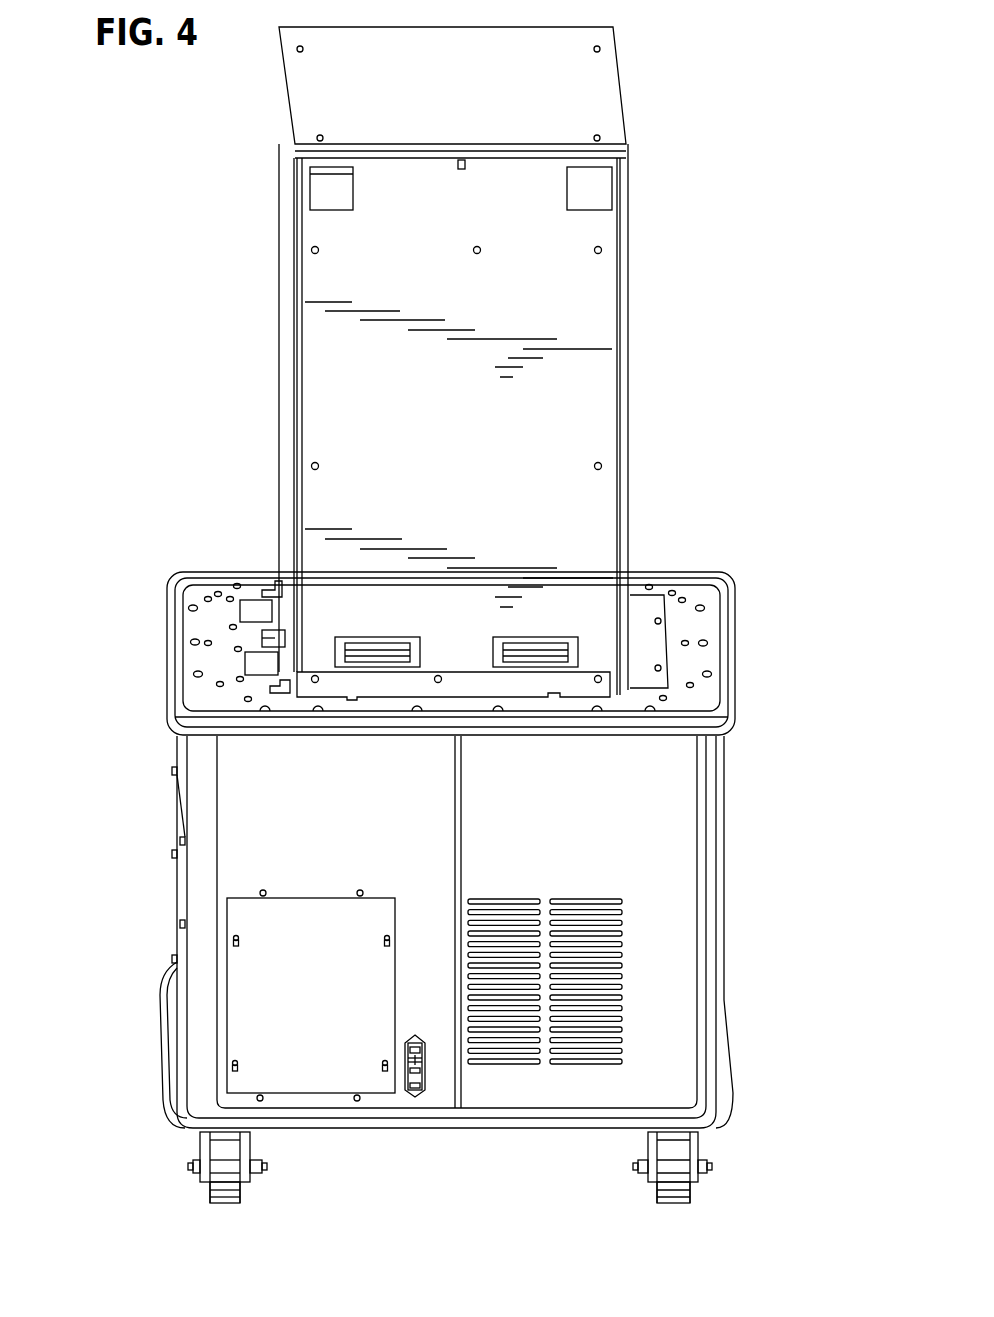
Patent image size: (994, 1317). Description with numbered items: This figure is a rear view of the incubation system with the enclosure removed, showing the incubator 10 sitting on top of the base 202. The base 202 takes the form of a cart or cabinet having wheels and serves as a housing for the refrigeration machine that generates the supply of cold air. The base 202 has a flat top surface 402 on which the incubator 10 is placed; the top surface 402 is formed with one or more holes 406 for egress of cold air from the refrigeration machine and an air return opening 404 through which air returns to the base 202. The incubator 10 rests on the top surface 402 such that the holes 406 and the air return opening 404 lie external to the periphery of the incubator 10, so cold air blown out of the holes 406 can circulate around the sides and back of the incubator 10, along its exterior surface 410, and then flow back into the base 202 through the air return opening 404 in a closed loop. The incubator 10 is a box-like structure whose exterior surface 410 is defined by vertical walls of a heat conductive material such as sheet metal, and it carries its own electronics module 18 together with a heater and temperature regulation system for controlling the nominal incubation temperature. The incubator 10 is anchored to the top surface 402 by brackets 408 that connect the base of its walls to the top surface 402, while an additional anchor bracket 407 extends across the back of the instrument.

The incubator 10 is at (628, 352).
The electronics module 18 is at (590, 230).
The exterior surface 410 is at (563, 384).
The air return opening 404 is at (640, 623).
The top surface 402 is at (688, 668).
The holes 406 is at (240, 613).
The anchor bracket 407 is at (575, 683).
The brackets 408 is at (263, 592).
The base 202 is at (660, 872).